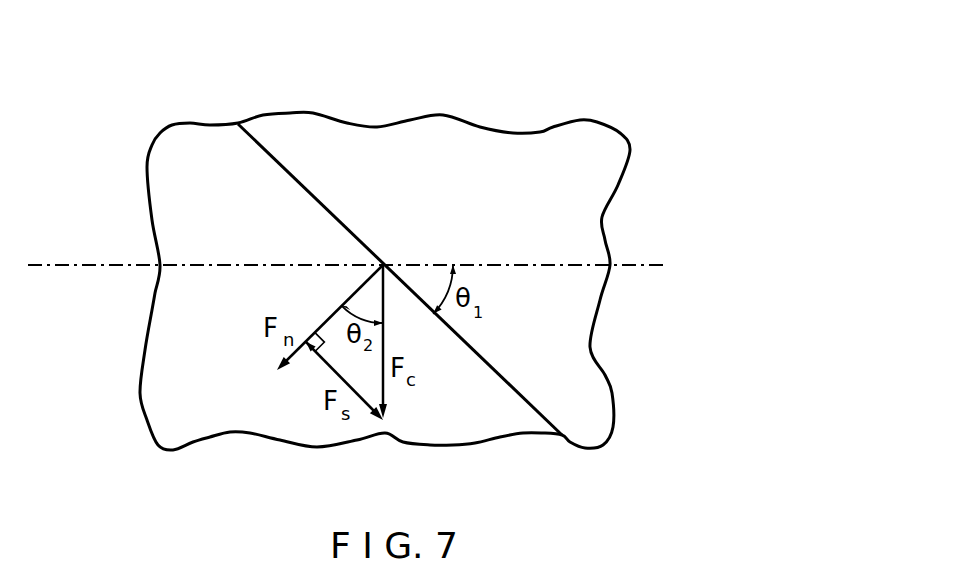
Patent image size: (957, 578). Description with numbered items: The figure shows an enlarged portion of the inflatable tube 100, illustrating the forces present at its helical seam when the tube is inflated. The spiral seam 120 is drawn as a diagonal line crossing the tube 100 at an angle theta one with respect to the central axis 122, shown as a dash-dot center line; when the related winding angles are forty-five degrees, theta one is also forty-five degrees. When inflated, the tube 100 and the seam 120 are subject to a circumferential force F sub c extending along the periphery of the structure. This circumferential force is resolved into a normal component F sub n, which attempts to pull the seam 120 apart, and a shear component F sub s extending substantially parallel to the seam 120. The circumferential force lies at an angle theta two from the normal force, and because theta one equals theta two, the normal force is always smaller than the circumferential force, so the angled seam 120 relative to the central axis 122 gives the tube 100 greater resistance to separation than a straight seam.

The inflatable tube 100 is at (580, 106).
The spiral seam 120 is at (272, 157).
The central axis 122 is at (630, 264).